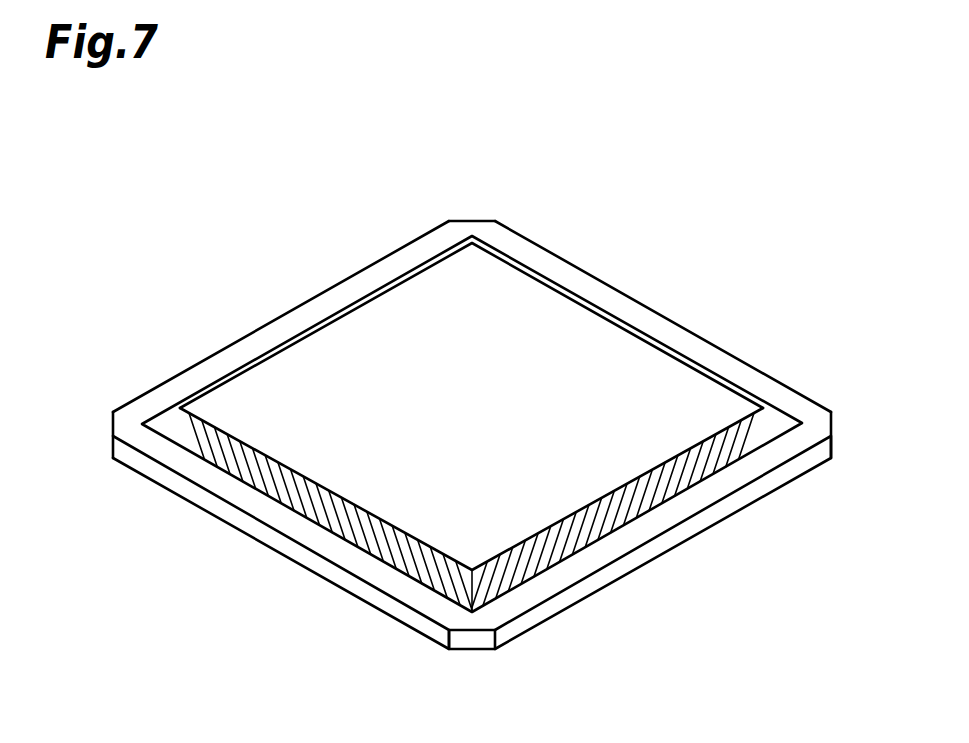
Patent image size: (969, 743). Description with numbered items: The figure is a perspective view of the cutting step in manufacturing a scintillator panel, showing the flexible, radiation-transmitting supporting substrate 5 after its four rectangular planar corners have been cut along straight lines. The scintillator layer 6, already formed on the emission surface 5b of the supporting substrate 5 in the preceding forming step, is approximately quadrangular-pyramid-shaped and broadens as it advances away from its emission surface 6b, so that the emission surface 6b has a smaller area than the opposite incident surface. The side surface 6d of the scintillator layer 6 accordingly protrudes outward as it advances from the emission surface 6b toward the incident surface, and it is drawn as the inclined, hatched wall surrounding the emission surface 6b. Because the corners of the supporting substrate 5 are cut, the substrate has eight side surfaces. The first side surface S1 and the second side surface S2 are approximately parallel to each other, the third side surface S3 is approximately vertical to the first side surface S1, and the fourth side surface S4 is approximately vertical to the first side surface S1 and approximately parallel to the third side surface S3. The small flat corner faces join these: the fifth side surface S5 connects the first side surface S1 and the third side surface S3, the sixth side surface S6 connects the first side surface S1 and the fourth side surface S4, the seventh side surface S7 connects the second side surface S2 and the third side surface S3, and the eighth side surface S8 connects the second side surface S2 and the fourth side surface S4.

The supporting substrate 5 is at (464, 435).
The emission surface 5b is at (473, 275).
The scintillator layer 6 is at (472, 414).
The emission surface 6b is at (575, 348).
The side surface 6d is at (643, 492).
The first side surface S1 is at (735, 502).
The second side surface S2 is at (193, 363).
The third side surface S3 is at (210, 500).
The fourth side surface S4 is at (753, 367).
The fifth side surface S5 is at (471, 638).
The sixth side surface S6 is at (832, 427).
The seventh side surface S7 is at (112, 423).
The eighth side surface S8 is at (472, 220).